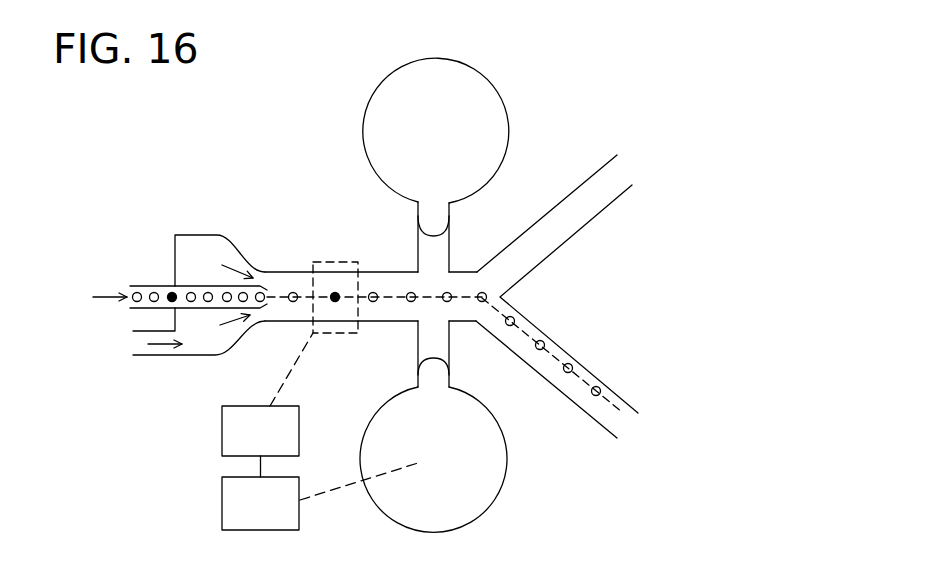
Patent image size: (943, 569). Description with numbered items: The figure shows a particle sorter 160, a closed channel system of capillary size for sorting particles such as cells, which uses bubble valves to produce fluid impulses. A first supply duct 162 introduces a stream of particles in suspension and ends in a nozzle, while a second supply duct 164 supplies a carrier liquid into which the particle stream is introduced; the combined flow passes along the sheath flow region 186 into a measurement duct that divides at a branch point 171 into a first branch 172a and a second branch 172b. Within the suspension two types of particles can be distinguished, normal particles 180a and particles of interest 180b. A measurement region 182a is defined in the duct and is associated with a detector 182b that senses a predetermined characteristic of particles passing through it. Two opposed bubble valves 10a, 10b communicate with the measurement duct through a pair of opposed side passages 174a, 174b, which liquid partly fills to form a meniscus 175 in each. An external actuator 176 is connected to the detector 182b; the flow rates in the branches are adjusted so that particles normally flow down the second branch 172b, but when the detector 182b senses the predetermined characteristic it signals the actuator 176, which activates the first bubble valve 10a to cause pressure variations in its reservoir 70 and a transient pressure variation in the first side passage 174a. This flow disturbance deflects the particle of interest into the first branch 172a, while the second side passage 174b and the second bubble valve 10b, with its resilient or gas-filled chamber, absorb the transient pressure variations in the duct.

The particle sorter 160 is at (287, 108).
The first supply duct 162 is at (130, 292).
The second supply duct 164 is at (140, 345).
The sheath flow channel 186 is at (295, 272).
The normal particles 180a is at (293, 303).
The particles of interest 180b is at (335, 293).
The measurement region 182a is at (334, 334).
The detector 182b is at (236, 443).
The external actuator 176 is at (241, 514).
The first side passage 174a is at (452, 356).
The second side passage 174b is at (418, 246).
The meniscus 175 is at (434, 232).
The first bubble valve 10a is at (492, 507).
The second bubble valve 10b is at (457, 63).
The reservoir 70 is at (488, 475).
The branch point 171 is at (480, 291).
The first branch 172a is at (585, 224).
The second branch 172b is at (585, 368).